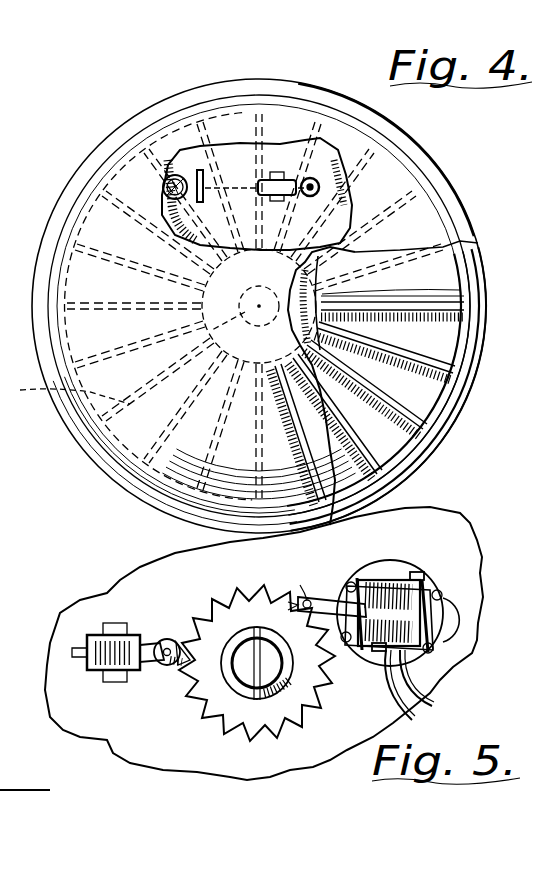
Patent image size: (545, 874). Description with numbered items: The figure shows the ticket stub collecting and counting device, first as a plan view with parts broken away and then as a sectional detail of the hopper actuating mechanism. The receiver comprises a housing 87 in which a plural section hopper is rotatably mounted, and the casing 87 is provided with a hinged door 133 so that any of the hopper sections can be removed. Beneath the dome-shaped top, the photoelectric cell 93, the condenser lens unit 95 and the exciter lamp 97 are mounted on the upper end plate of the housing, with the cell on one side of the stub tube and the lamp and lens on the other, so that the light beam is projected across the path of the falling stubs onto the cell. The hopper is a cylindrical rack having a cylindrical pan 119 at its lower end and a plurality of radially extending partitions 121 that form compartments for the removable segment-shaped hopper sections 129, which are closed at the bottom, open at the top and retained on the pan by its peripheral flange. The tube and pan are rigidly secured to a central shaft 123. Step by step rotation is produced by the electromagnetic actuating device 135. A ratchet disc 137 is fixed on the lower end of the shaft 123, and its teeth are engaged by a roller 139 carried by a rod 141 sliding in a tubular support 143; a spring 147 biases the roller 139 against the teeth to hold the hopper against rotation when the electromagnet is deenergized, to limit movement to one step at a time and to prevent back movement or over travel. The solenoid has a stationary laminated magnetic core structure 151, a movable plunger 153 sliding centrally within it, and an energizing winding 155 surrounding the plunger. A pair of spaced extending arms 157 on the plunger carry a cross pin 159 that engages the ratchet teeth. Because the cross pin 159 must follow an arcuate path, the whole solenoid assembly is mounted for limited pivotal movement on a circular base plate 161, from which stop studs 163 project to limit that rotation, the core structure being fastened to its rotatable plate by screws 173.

In FIG. 4, the housing 87 is at (464, 211).
In FIG. 4, the photoelectric cell 93 is at (165, 176).
In FIG. 4, the condenser lens unit 95 is at (285, 178).
In FIG. 4, the exciter lamp 97 is at (316, 183).
In FIG. 4, the cylindrical pan 119 is at (420, 439).
In FIG. 4, the radially extending partitions 121 is at (430, 399).
In FIG. 4, the central shaft 123 is at (195, 337).
In FIG. 4, the hopper sections 129 is at (455, 364).
In FIG. 4, the hinged door 133 is at (487, 314).
In FIG. 5, the electromagnetic actuating device 135 is at (399, 613).
In FIG. 5, the ratchet disc 137 is at (206, 736).
In FIG. 5, the roller 139 is at (167, 639).
In FIG. 5, the rod 141 is at (86, 660).
In FIG. 5, the tubular support 143 is at (142, 667).
In FIG. 5, the spring 147 is at (107, 635).
In FIG. 5, the laminated magnetic core structure 151 is at (435, 590).
In FIG. 5, the movable plunger 153 is at (448, 608).
In FIG. 5, the energizing winding 155 is at (392, 580).
In FIG. 5, the extending arms 157 is at (345, 604).
In FIG. 5, the cross pin 159 is at (305, 585).
In FIG. 5, the circular base plate 161 is at (395, 672).
In FIG. 5, the studs 163 is at (422, 572).
In FIG. 5, the screws 173 is at (361, 580).